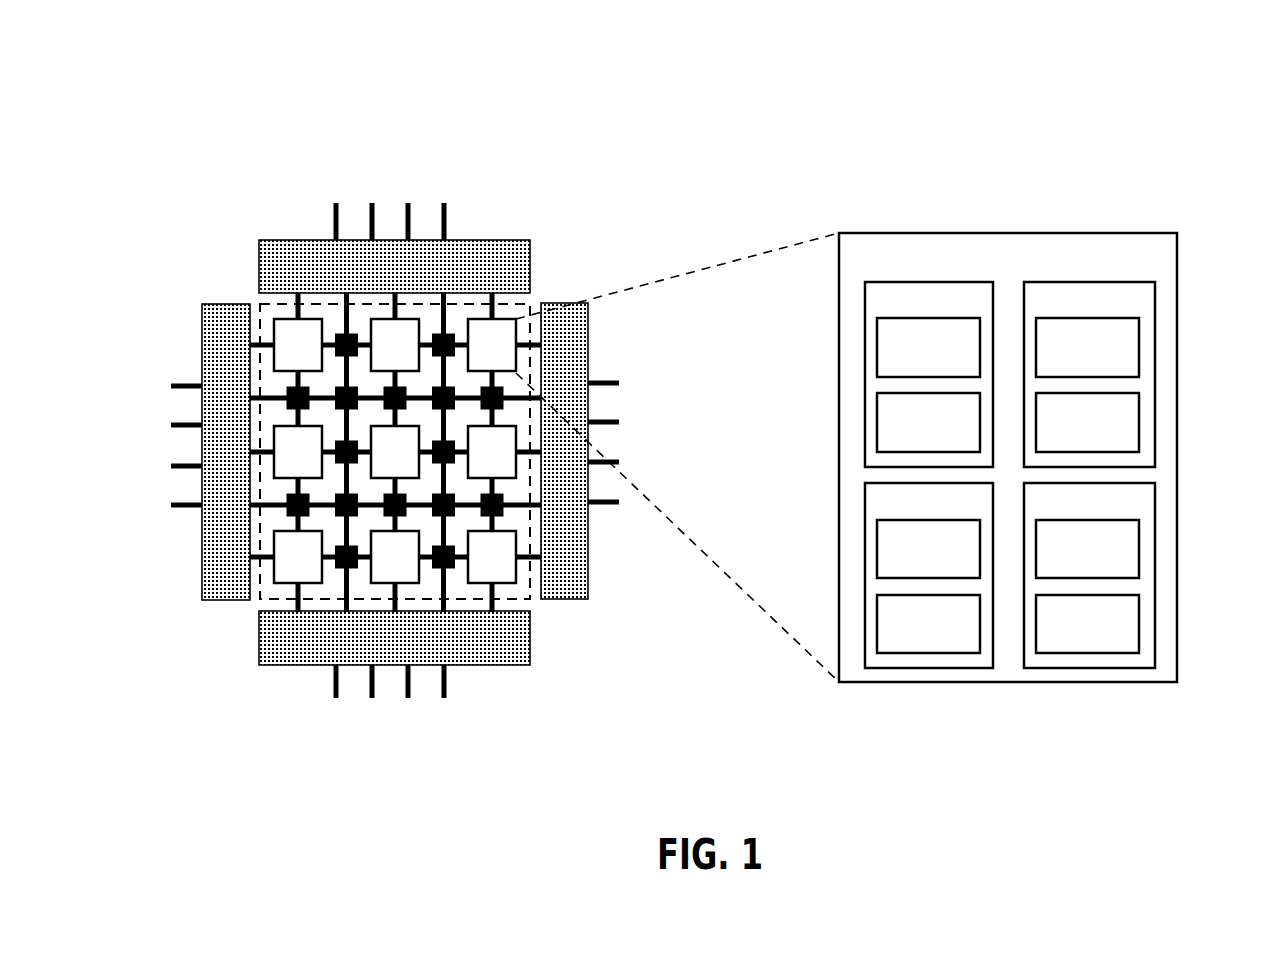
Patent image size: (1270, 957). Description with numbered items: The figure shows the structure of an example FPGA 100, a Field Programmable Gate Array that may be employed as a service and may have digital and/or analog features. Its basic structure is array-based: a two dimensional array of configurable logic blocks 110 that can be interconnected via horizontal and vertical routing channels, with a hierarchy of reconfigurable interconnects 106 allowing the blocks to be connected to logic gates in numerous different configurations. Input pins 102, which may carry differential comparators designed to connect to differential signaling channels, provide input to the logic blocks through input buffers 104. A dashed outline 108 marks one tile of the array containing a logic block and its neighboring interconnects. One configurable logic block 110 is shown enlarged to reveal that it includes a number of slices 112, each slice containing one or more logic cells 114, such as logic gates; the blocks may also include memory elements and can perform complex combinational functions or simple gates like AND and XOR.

The FPGA 100 is at (398, 137).
The input pins 102 is at (331, 203).
The input buffers 104 is at (256, 270).
The reconfigurable interconnects 106 is at (457, 333).
The programmable tile 108 is at (260, 563).
The configurable logic blocks 110 is at (520, 333).
The slices 112 is at (863, 316).
The logic cells 114 is at (1139, 389).